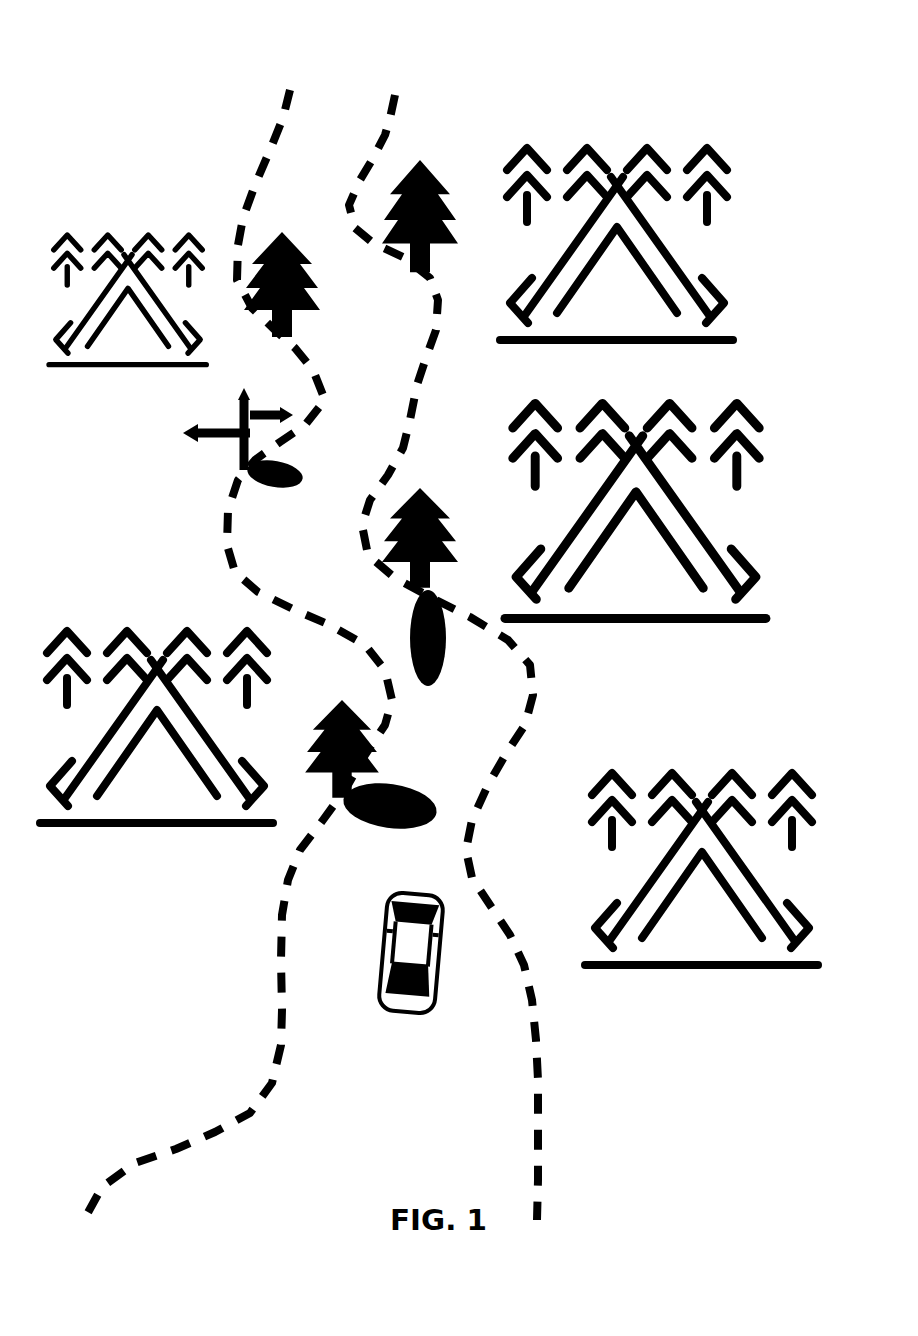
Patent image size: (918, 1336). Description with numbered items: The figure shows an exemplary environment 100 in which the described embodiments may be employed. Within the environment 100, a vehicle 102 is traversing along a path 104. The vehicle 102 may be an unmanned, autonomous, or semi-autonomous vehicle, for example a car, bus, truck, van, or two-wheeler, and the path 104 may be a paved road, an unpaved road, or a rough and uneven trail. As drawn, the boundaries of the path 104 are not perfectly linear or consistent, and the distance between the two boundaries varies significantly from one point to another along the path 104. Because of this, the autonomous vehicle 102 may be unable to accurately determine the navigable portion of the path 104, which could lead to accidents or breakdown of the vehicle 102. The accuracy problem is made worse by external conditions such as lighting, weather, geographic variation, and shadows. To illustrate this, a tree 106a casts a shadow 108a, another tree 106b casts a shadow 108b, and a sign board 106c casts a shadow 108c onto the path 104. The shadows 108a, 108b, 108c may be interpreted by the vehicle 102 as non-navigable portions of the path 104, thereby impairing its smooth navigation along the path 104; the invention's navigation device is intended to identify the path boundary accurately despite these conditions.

The environment 100 is at (298, 56).
The vehicle 102 is at (432, 980).
The path 104 is at (428, 1111).
The tree 106a is at (377, 768).
The tree 106b is at (445, 508).
The sign board 106c is at (300, 413).
The shadow 108a is at (413, 799).
The shadow 108b is at (447, 682).
The shadow 108c is at (302, 486).